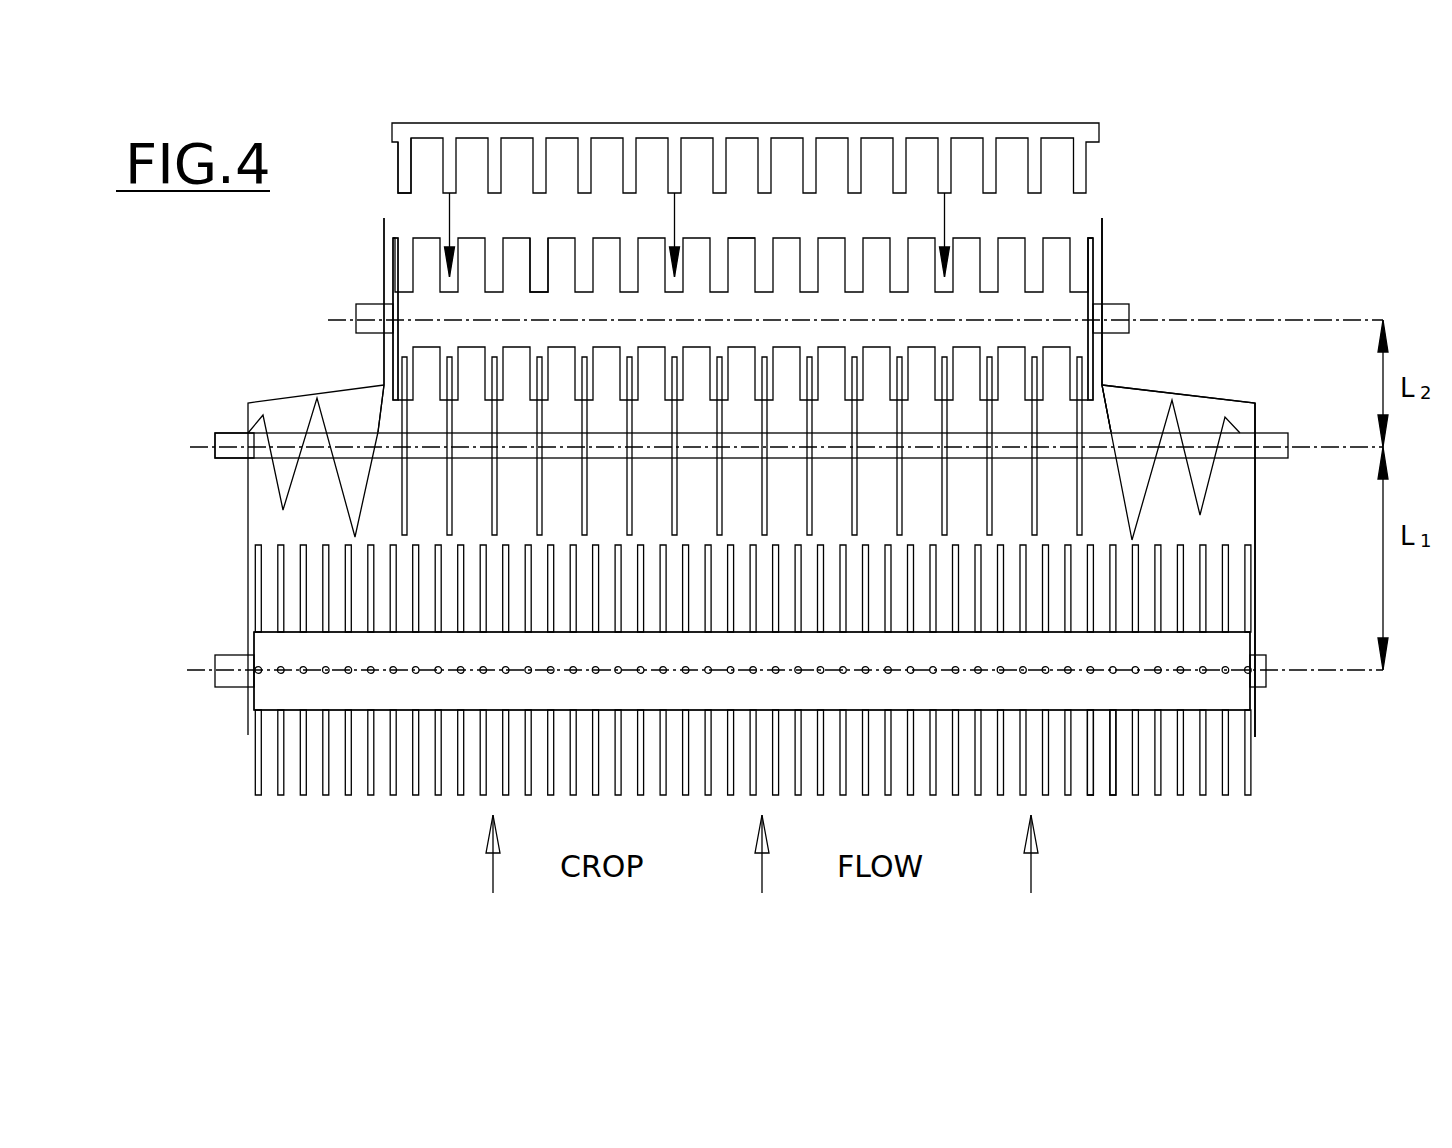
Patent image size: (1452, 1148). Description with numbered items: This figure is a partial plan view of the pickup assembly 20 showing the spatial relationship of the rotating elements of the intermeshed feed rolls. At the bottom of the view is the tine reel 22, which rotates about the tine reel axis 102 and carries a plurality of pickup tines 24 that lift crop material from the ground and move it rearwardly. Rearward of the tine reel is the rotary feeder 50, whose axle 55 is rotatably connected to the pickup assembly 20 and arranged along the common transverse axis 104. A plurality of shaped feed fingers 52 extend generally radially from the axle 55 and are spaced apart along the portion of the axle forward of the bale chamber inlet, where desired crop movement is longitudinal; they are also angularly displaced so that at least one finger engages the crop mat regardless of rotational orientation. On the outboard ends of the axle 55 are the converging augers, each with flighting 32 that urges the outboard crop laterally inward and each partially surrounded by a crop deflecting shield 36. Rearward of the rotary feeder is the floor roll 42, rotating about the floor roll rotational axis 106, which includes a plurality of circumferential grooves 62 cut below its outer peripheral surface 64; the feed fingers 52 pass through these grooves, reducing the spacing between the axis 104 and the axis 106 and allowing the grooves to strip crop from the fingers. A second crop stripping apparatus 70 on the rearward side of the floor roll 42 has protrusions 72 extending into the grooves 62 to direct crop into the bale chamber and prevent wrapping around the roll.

The pickup assembly 20 is at (387, 805).
The tine reel 22 is at (1267, 807).
The pickup tines 24 is at (1112, 797).
The flighting 32 is at (380, 417).
The crop deflecting shield 36 is at (285, 400).
The floor roll 42 is at (997, 222).
The rotary feeder 50 is at (1207, 352).
The feed fingers 52 is at (493, 357).
The axle 55 is at (228, 455).
The circumferential grooves 62 is at (523, 228).
The outer peripheral surface 64 is at (742, 240).
The second crop stripping apparatus 70 is at (1102, 163).
The protrusions 72 is at (403, 165).
The tine reel axis 102 is at (1326, 672).
The common transverse axis 104 is at (1302, 443).
The floor roll rotational axis 106 is at (1199, 318).